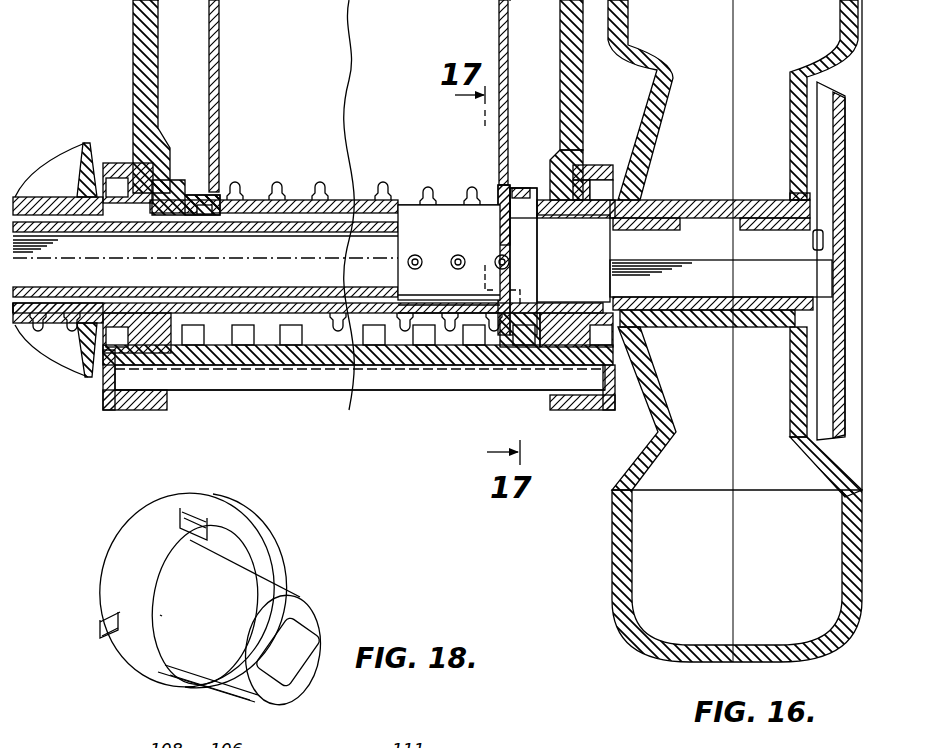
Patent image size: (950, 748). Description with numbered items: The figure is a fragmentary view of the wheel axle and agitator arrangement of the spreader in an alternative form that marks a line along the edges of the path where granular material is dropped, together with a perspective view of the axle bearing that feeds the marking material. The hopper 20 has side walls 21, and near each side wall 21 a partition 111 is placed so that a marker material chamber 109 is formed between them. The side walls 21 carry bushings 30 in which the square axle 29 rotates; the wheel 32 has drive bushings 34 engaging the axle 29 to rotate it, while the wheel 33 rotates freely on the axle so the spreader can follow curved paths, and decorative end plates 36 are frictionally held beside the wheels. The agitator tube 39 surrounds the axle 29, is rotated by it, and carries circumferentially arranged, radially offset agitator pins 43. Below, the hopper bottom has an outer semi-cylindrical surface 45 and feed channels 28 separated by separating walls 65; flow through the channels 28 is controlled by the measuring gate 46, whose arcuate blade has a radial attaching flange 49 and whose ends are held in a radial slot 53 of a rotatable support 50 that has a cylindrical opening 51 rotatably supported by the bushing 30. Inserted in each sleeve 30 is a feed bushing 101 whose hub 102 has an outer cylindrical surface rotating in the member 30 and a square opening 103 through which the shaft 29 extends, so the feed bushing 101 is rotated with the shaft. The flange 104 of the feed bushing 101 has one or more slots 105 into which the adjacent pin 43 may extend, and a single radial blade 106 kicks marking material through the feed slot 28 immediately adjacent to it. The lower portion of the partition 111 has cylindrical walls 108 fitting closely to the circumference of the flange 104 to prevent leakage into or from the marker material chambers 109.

In FIG. 16, the hopper 20 is at (331, 100).
In FIG. 16, the side walls 21 is at (138, 93).
In FIG. 16, the feed opening means 28 is at (375, 325).
In FIG. 16, the axle 29 is at (298, 230).
In FIG. 16, the bushings 30 is at (152, 192).
In FIG. 16, the wheel 32 is at (612, 566).
In FIG. 16, the wheel 33 is at (83, 355).
In FIG. 16, the drive bushings 34 is at (755, 303).
In FIG. 16, the end plates 36 is at (845, 385).
In FIG. 16, the agitator tube 39 is at (413, 203).
In FIG. 16, the agitator pins 43 is at (255, 345).
In FIG. 16, the outer semi-cylindrical surface 45 is at (393, 350).
In FIG. 16, the measuring gate 46 is at (238, 392).
In FIG. 16, the radial attaching flange 49 is at (480, 386).
In FIG. 16, the rotatable support 50 is at (600, 165).
In FIG. 16, the cylindrical opening 51 is at (625, 328).
In FIG. 16, the radial slot 53 is at (598, 410).
In FIG. 16, the separating wall 65 is at (390, 391).
In FIG. 16, the feed bushing 101 is at (202, 183).
In FIG. 18, the feed bushing 101 is at (300, 560).
In FIG. 16, the hub 102 is at (130, 218).
In FIG. 18, the hub 102 is at (300, 590).
In FIG. 16, the square opening 103 is at (150, 218).
In FIG. 18, the square opening 103 is at (302, 628).
In FIG. 16, the flange 104 is at (221, 194).
In FIG. 18, the flange 104 is at (125, 560).
In FIG. 16, the slots 105 is at (215, 346).
In FIG. 18, the slots 105 is at (107, 633).
In FIG. 16, the radial blade 106 is at (518, 188).
In FIG. 18, the radial blade 106 is at (207, 519).
In FIG. 16, the cylindrical walls 108 is at (218, 190).
In FIG. 16, the marker material chambers 109 is at (192, 88).
In FIG. 16, the partitions 111 is at (219, 84).